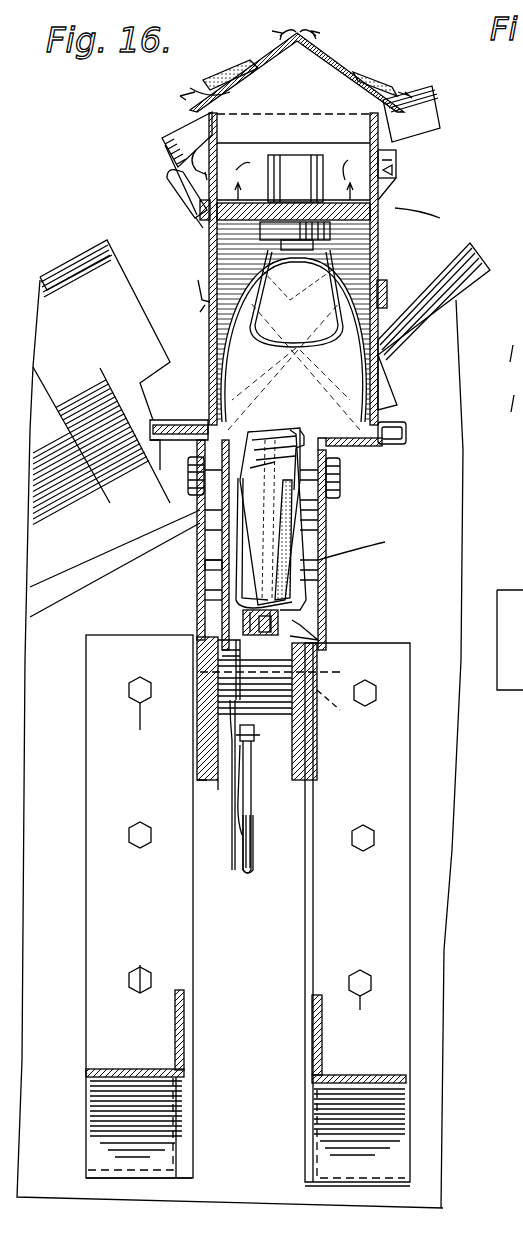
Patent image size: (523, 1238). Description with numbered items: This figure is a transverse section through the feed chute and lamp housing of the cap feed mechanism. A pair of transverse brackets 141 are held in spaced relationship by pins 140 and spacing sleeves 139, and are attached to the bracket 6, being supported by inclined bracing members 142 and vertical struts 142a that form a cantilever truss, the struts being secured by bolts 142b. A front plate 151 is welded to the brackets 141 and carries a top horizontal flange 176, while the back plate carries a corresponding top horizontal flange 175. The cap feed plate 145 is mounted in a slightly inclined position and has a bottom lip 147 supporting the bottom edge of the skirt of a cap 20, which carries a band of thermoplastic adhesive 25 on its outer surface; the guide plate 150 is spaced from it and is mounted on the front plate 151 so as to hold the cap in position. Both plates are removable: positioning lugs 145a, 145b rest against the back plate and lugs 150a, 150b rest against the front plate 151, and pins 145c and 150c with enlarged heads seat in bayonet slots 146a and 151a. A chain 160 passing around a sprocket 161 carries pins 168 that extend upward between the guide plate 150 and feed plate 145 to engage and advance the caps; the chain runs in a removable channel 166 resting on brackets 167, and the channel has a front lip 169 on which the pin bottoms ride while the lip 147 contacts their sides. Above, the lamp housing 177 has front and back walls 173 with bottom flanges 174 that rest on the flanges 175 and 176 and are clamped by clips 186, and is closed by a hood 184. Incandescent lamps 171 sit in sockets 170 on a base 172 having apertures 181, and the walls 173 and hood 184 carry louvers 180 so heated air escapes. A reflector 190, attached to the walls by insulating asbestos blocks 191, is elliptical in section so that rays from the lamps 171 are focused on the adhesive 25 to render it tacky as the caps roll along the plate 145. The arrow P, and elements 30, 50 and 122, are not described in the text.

The bracket 6 is at (448, 470).
The cap 20 is at (363, 547).
The band of thermoplastic adhesive 25 is at (261, 458).
The bar 30 is at (440, 95).
The housing member 50 is at (78, 256).
The direction arrow P is at (125, 233).
The adjacent figure part 122 is at (507, 672).
The spacing sleeve 139 is at (205, 715).
The pin 140 is at (344, 703).
The transverse bracket 141 is at (200, 768).
The inclined bracing member 142 is at (100, 1115).
The vertical strut 142a is at (315, 945).
The bolt 142b is at (388, 668).
The cap feed plate 145 is at (318, 540).
The positioning lug 145a is at (328, 514).
The positioning lug 145b is at (328, 574).
The pin 145c is at (335, 492).
The bayonet slot 146a is at (305, 430).
The bottom lip 147 is at (280, 630).
The guide plate 150 is at (196, 540).
The positioning lug 150a is at (196, 522).
The positioning lug 150b is at (196, 585).
The pin 150c is at (165, 510).
The front plate 151 is at (198, 615).
The bayonet slot 151a is at (235, 425).
The chain 160 is at (272, 775).
The sprocket 161 is at (216, 785).
The channel 166 is at (310, 642).
The bracket 167 is at (203, 700).
The pin 168 is at (198, 573).
The front lip 169 is at (198, 640).
The socket 170 is at (300, 152).
The incandescent lamp 171 is at (296, 298).
The base 172 is at (262, 200).
The wall 173 is at (208, 258).
The bottom flange 174 is at (186, 410).
The top horizontal flange 175 is at (370, 452).
The top horizontal flange 176 is at (182, 476).
The lamp housing 177 is at (413, 188).
The louver 180 is at (216, 72).
The aperture 181 is at (324, 160).
The hood 184 is at (322, 62).
The clip 186 is at (145, 420).
The reflector 190 is at (350, 360).
The asbestos block 191 is at (432, 204).